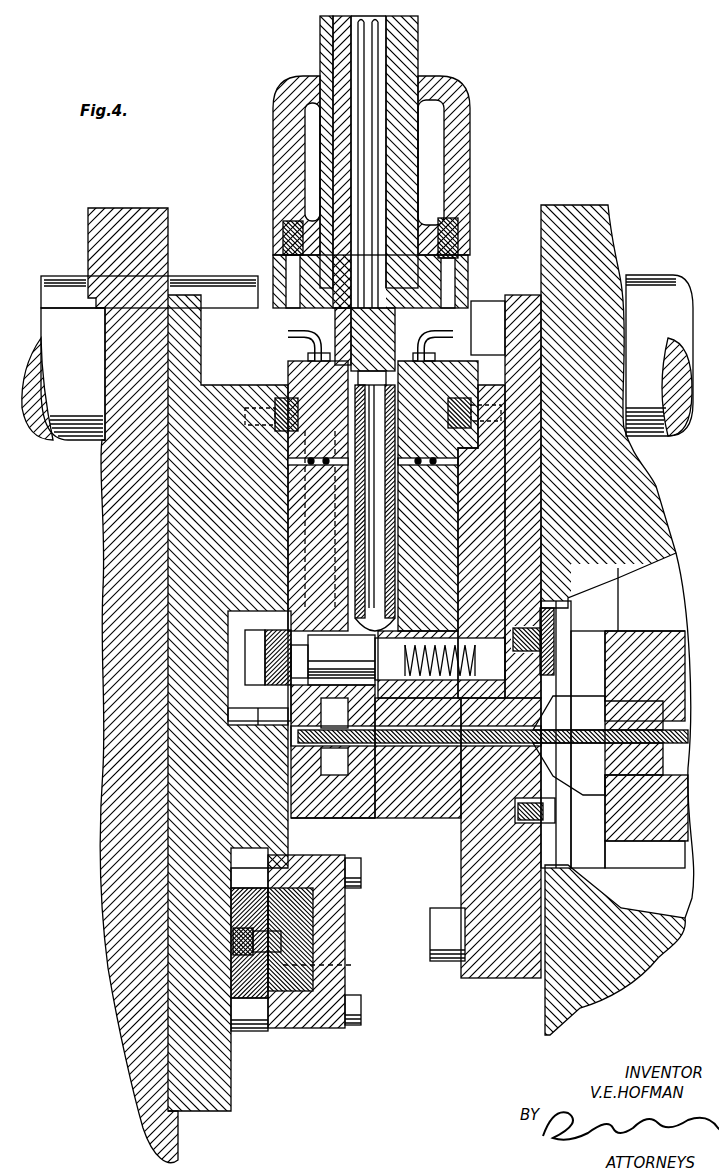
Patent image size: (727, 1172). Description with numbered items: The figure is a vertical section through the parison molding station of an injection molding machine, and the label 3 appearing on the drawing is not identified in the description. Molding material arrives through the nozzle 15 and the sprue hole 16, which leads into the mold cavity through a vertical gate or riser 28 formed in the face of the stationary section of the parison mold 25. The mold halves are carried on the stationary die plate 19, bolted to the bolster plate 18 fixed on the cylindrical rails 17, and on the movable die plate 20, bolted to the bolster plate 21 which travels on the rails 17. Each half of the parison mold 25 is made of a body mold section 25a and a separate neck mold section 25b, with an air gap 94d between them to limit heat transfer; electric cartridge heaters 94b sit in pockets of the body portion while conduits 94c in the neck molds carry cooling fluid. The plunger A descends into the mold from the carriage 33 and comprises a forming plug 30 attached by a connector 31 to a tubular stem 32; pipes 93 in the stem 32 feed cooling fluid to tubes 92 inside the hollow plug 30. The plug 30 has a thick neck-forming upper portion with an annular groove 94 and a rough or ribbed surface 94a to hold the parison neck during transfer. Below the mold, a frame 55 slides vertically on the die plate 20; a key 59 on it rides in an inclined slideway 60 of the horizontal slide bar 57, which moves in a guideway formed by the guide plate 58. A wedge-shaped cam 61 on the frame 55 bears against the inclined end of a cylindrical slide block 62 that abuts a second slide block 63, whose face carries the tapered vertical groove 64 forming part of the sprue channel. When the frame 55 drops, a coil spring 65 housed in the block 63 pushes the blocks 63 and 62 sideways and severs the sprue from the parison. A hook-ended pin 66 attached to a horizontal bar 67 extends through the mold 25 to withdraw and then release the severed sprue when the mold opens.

The shaft 3 is at (140, 358).
The nozzle 15 is at (570, 672).
The sprue hole 16 is at (448, 740).
The horizontal cylindrical rails 17 is at (648, 280).
The bolster plate 18 is at (648, 478).
The stationary die plate 19 is at (457, 866).
The movable die plate 20 is at (183, 592).
The bolster plate 21 is at (95, 578).
The parison mold 25 is at (348, 812).
The body mold section 25a is at (452, 502).
The neck mold section 25b is at (312, 360).
The gate or riser 28 is at (380, 650).
The forming plug 30 is at (388, 492).
The connector 31 is at (380, 340).
The tubular stem 32 is at (395, 62).
The carriage 33 is at (312, 179).
The frame 55 is at (250, 980).
The slide bar 57 is at (290, 985).
The guide plate 58 is at (328, 936).
The key 59 is at (252, 920).
The inclined slideway 60 is at (328, 965).
The wedge-shaped cam 61 is at (255, 648).
The cylindrical slide block 62 is at (328, 670).
The slide block 63 is at (341, 660).
The vertical groove 64 is at (341, 670).
The coil spring 65 is at (500, 628).
The pin 66 is at (334, 761).
The horizontal bar 67 is at (302, 763).
The tubes 92 is at (373, 545).
The pipes 93 is at (369, 36).
The annular groove 94 is at (386, 428).
The rough or ribbed surface 94a is at (347, 425).
The electric cartridge heaters 94b is at (300, 505).
The conduits 94c is at (278, 372).
The air gap 94d is at (440, 447).
The plunger A is at (421, 146).